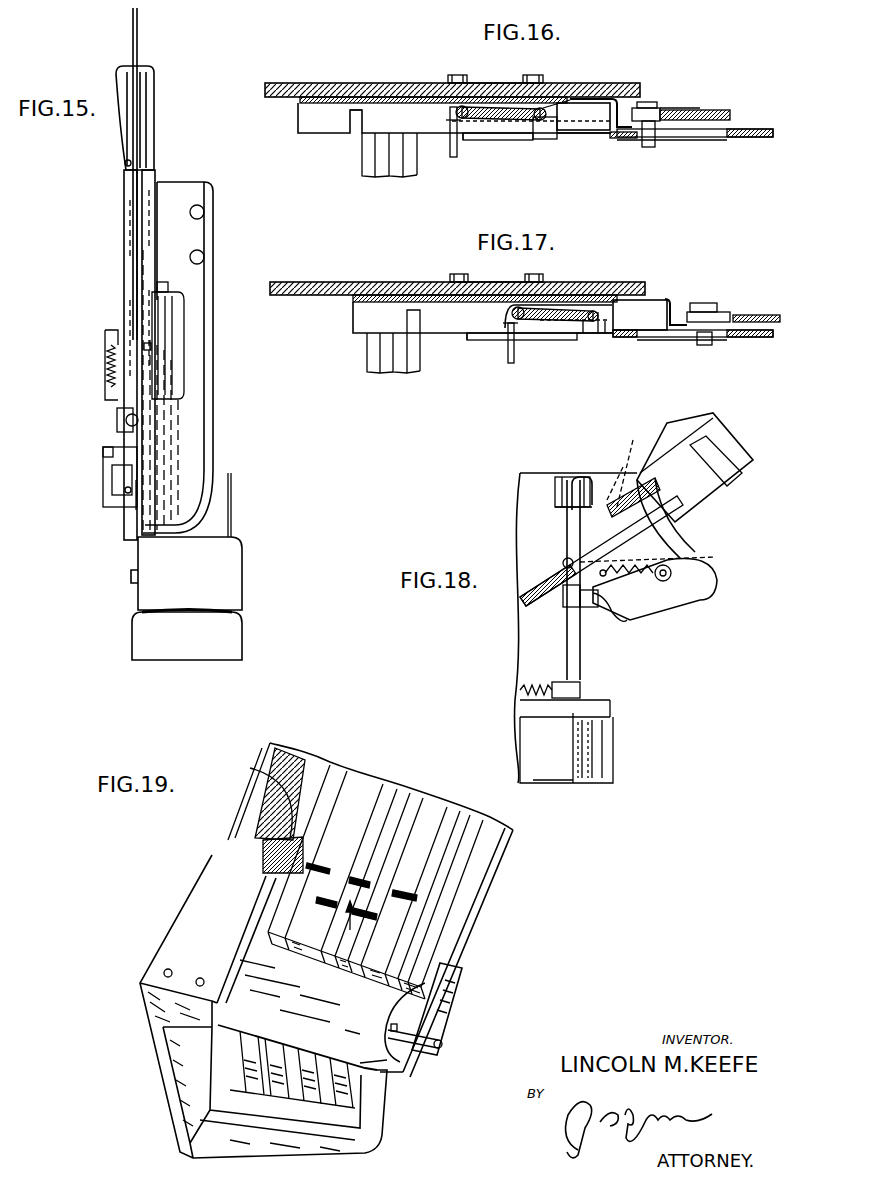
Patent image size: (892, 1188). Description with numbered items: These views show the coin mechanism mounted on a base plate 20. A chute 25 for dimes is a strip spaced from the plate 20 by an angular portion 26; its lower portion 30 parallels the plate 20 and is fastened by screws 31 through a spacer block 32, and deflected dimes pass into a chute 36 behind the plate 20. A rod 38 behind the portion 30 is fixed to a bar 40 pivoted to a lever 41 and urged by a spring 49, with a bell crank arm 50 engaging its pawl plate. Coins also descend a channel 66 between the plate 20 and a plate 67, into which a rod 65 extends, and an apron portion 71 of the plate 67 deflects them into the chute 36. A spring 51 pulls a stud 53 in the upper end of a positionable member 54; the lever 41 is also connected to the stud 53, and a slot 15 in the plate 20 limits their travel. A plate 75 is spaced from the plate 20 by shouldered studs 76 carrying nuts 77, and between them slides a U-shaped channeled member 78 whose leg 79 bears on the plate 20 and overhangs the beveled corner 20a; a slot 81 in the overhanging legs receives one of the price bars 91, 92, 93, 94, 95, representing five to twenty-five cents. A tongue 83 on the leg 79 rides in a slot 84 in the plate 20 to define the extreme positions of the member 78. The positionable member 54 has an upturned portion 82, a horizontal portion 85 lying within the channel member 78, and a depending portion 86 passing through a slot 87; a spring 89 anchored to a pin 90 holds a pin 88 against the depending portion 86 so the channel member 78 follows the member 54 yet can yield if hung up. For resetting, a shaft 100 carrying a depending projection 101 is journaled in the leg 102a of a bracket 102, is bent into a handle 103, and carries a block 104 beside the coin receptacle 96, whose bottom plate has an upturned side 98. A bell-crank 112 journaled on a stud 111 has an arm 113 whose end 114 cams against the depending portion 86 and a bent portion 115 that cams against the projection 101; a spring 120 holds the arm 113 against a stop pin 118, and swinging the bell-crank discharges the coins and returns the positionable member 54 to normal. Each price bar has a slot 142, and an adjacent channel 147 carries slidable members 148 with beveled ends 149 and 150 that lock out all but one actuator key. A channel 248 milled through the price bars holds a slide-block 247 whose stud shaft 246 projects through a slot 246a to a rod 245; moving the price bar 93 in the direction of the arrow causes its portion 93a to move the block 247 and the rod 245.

In FIG. 15, the chute 25 is at (128, 133).
In FIG. 15, the angular portion 26 is at (125, 165).
In FIG. 15, the channel 66 is at (145, 268).
In FIG. 15, the plate 67 is at (162, 287).
In FIG. 15, the rod 65 is at (150, 347).
In FIG. 15, the apron portion 71 is at (178, 381).
In FIG. 15, the rod 38 is at (138, 420).
In FIG. 15, the chute 36 is at (204, 436).
In FIG. 15, the bell crank arm 50 is at (108, 363).
In FIG. 15, the spring 49 is at (110, 382).
In FIG. 15, the bar 40 is at (117, 412).
In FIG. 15, the portion 30 is at (112, 473).
In FIG. 15, the screws 31 is at (124, 489).
In FIG. 15, the spacer block 32 is at (136, 505).
In FIG. 15, the coin receptacle 96 is at (233, 560).
In FIG. 15, the upturned side 98 is at (233, 627).
In FIG. 16, the plate 75 is at (360, 83).
In FIG. 17, the plate 75 is at (595, 282).
In FIG. 18, the plate 75 is at (697, 433).
In FIG. 16, the nuts 77 is at (450, 78).
In FIG. 17, the nuts 77 is at (452, 277).
In FIG. 16, the shouldered studs 76 is at (532, 75).
In FIG. 17, the shouldered studs 76 is at (532, 275).
In FIG. 16, the channeled member 78 is at (300, 99).
In FIG. 18, the channeled member 78 is at (722, 420).
In FIG. 16, the leg 79 is at (311, 130).
In FIG. 16, the slot 81 is at (355, 128).
In FIG. 17, the slot 81 is at (415, 318).
In FIG. 18, the slot 81 is at (718, 487).
In FIG. 16, the price bar 91 is at (367, 178).
In FIG. 17, the price bar 91 is at (372, 375).
In FIG. 19, the price bar 91 is at (460, 812).
In FIG. 16, the price bar 92 is at (380, 180).
In FIG. 17, the price bar 92 is at (385, 375).
In FIG. 19, the price bar 92 is at (445, 810).
In FIG. 16, the price bar 93 is at (392, 180).
In FIG. 17, the price bar 93 is at (396, 375).
In FIG. 19, the price bar 93 is at (427, 803).
In FIG. 16, the price bar 94 is at (405, 180).
In FIG. 17, the price bar 94 is at (408, 375).
In FIG. 19, the price bar 94 is at (395, 790).
In FIG. 16, the price bar 95 is at (416, 178).
In FIG. 17, the price bar 95 is at (421, 374).
In FIG. 19, the price bar 95 is at (365, 783).
In FIG. 16, the depending portion 86 is at (453, 158).
In FIG. 17, the depending portion 86 is at (511, 364).
In FIG. 16, the pin 88 is at (455, 111).
In FIG. 17, the pin 88 is at (503, 311).
In FIG. 16, the spring 89 is at (517, 121).
In FIG. 17, the spring 89 is at (556, 321).
In FIG. 16, the slot 87 is at (497, 140).
In FIG. 17, the slot 87 is at (487, 340).
In FIG. 16, the beveled corner 20a is at (470, 141).
In FIG. 17, the beveled corner 20a is at (470, 340).
In FIG. 16, the tongue 83 is at (545, 130).
In FIG. 17, the tongue 83 is at (598, 328).
In FIG. 16, the horizontal portion 85 is at (583, 116).
In FIG. 17, the horizontal portion 85 is at (640, 315).
In FIG. 16, the slot 84 is at (592, 134).
In FIG. 17, the slot 84 is at (566, 336).
In FIG. 16, the pin 90 is at (560, 108).
In FIG. 17, the pin 90 is at (594, 326).
In FIG. 16, the upturned portion 82 is at (622, 105).
In FIG. 17, the upturned portion 82 is at (668, 300).
In FIG. 16, the positionable member 54 is at (625, 139).
In FIG. 17, the positionable member 54 is at (680, 320).
In FIG. 16, the lever 41 is at (665, 107).
In FIG. 17, the lever 41 is at (717, 311).
In FIG. 16, the stud 53 is at (649, 148).
In FIG. 17, the stud 53 is at (703, 346).
In FIG. 18, the stud 53 is at (601, 551).
In FIG. 16, the spring 51 is at (708, 103).
In FIG. 17, the spring 51 is at (755, 316).
In FIG. 16, the plate 20 is at (746, 138).
In FIG. 17, the plate 20 is at (746, 338).
In FIG. 16, the slot 15 is at (682, 140).
In FIG. 17, the slot 15 is at (672, 340).
In FIG. 18, the shaft 100 is at (567, 628).
In FIG. 18, the depending projection 101 is at (592, 610).
In FIG. 18, the bracket 102 is at (555, 490).
In FIG. 18, the leg 102a is at (560, 510).
In FIG. 18, the handle 103 is at (584, 478).
In FIG. 18, the block 104 is at (560, 688).
In FIG. 18, the stud 111 is at (672, 574).
In FIG. 18, the bell-crank 112 is at (680, 600).
In FIG. 18, the arm 113 is at (688, 540).
In FIG. 18, the end 114 is at (630, 465).
In FIG. 18, the bent portion 115 is at (622, 625).
In FIG. 18, the stop pin 118 is at (625, 560).
In FIG. 18, the spring 120 is at (594, 579).
In FIG. 19, the slot 142 is at (407, 900).
In FIG. 19, the channel 147 is at (210, 877).
In FIG. 19, the slidable members 148 is at (258, 815).
In FIG. 19, the beveled end 149 is at (265, 857).
In FIG. 19, the beveled end 150 is at (252, 766).
In FIG. 19, the slide-block 247 is at (272, 993).
In FIG. 19, the channel 248 is at (263, 955).
In FIG. 19, the portion 93a is at (277, 1030).
In FIG. 19, the rod 245 is at (460, 972).
In FIG. 19, the stud shaft 246 is at (442, 1043).
In FIG. 19, the slot 246a is at (402, 1062).